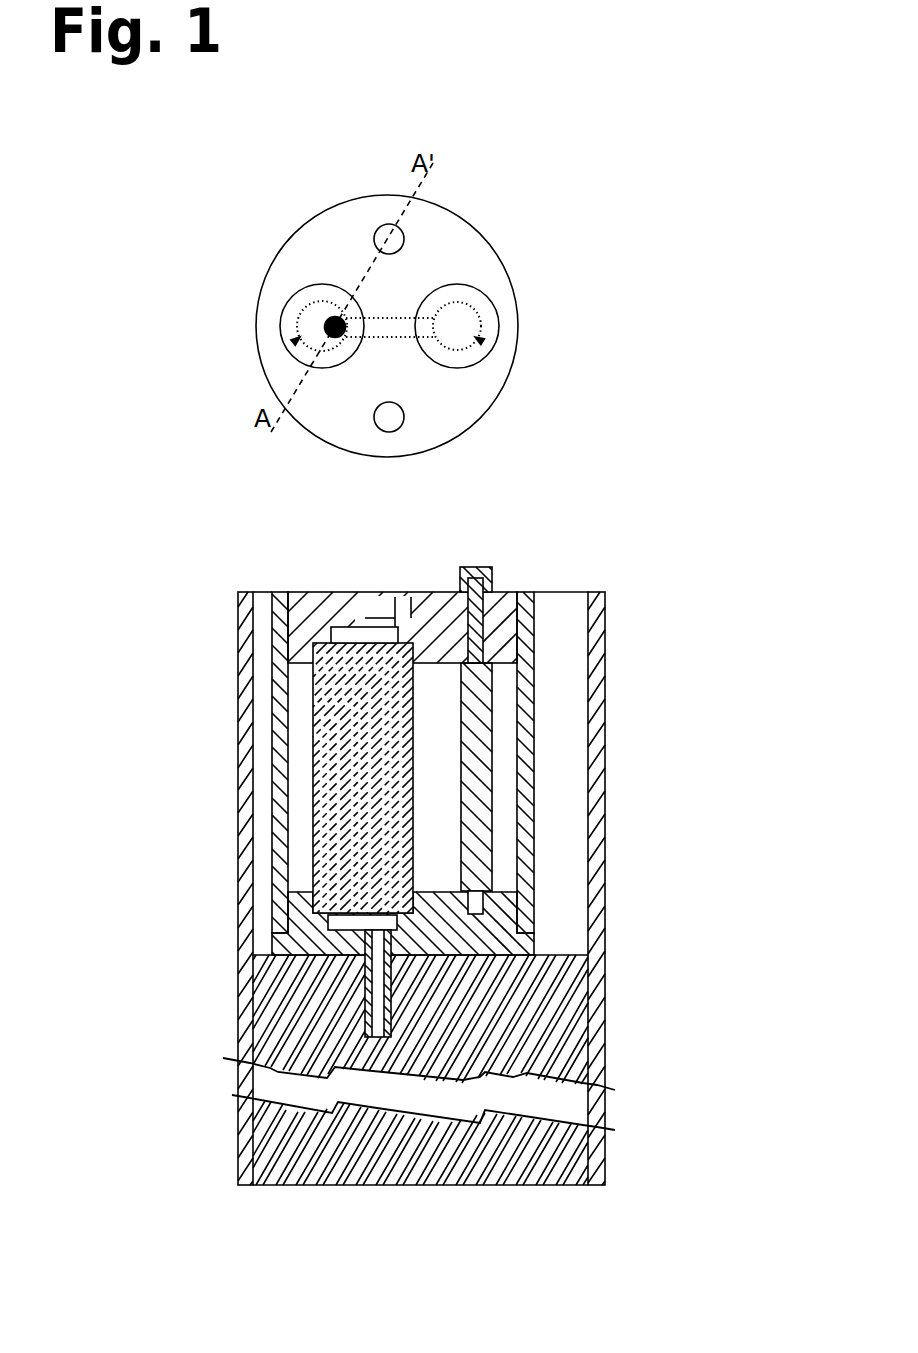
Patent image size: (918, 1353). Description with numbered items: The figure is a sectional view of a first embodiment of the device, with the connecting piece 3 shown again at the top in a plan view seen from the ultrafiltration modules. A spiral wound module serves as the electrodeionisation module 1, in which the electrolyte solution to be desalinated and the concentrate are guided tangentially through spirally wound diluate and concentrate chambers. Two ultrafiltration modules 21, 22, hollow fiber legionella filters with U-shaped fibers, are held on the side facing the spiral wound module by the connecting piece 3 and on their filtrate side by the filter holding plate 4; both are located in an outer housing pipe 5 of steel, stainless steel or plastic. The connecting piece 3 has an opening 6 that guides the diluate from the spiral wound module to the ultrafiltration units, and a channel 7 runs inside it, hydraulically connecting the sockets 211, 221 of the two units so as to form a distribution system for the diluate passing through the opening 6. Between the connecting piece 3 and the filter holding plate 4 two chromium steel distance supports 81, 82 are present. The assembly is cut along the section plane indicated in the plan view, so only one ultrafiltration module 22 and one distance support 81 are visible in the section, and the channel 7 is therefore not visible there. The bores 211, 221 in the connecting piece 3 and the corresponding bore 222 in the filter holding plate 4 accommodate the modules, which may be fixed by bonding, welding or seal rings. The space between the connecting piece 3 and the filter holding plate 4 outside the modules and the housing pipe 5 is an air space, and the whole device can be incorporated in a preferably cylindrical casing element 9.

The electrodeionisation module 1 is at (300, 1148).
The connecting piece 3 is at (313, 237).
The filter holding plate 4 is at (447, 608).
The outer housing pipe 5 is at (530, 679).
The opening 6 is at (335, 327).
The channel 7 is at (398, 330).
The casing element 9 is at (598, 1160).
The ultrafiltration module 21 is at (455, 296).
The ultrafiltration module 22 is at (340, 357).
The distance support 81 is at (400, 242).
The distance support 82 is at (389, 426).
The bore 211 is at (475, 338).
The bore 221 is at (300, 337).
The bore 222 is at (350, 632).